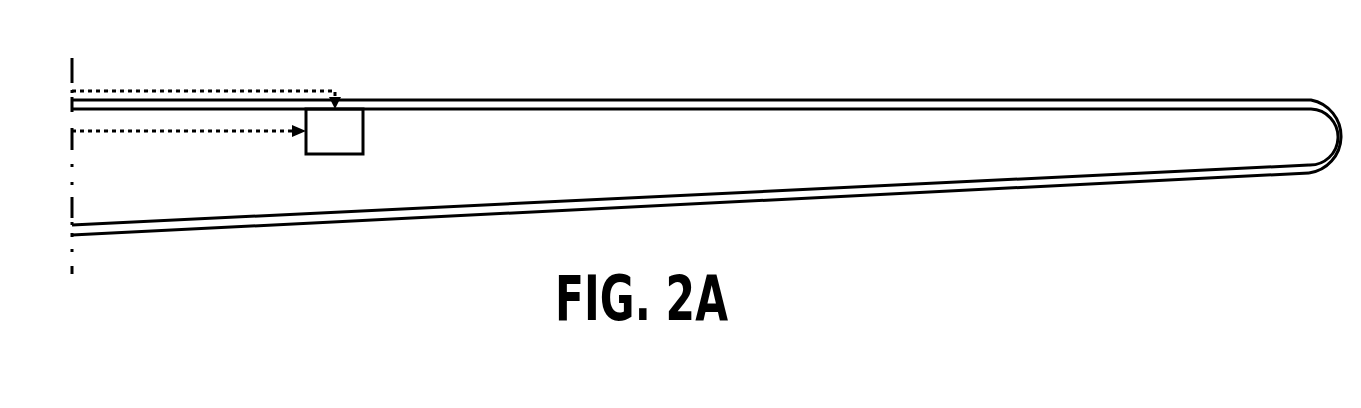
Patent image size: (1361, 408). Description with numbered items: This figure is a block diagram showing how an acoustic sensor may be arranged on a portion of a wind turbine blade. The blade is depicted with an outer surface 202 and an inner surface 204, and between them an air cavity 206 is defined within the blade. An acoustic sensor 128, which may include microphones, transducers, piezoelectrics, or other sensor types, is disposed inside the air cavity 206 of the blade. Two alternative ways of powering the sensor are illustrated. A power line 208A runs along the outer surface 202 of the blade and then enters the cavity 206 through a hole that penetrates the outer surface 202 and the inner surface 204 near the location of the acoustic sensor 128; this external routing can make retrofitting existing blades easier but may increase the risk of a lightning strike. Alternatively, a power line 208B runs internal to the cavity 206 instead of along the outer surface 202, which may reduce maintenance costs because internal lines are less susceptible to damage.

The outer surface 202 is at (615, 99).
The inner surface 204 is at (258, 217).
The air cavity 206 is at (582, 183).
The acoustic sensor 128 is at (334, 131).
The power line 208A is at (298, 92).
The power line 208B is at (213, 131).